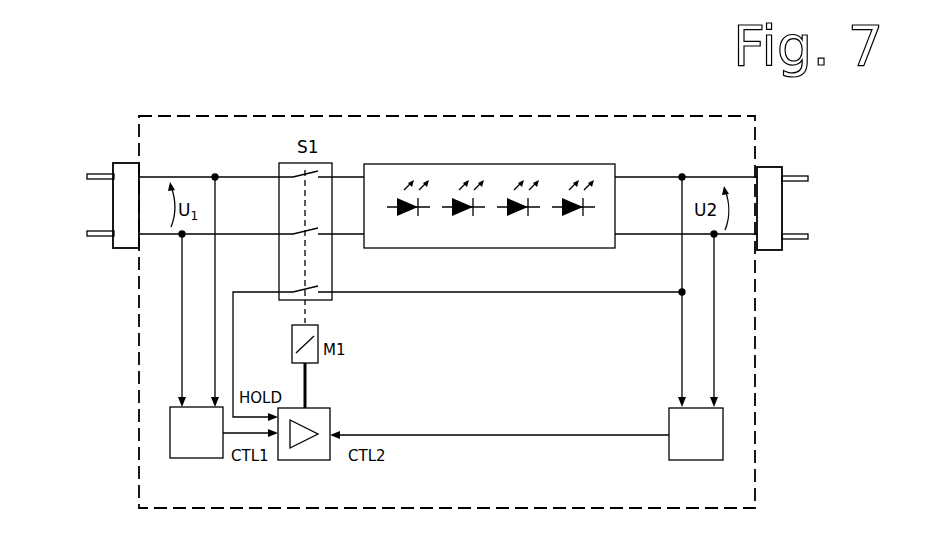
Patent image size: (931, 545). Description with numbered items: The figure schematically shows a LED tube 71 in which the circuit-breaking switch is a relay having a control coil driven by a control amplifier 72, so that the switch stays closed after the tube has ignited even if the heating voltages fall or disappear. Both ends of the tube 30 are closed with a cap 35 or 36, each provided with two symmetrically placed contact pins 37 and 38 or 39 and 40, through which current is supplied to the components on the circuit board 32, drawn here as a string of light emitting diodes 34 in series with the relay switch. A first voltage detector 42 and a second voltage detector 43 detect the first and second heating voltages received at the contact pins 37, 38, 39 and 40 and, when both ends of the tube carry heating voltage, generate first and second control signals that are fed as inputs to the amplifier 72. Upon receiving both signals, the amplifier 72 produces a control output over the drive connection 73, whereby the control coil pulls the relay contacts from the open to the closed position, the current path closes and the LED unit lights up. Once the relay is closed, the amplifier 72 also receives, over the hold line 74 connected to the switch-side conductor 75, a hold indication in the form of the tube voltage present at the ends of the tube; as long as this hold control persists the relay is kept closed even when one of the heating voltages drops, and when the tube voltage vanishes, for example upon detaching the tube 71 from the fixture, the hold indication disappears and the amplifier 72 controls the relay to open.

The tube 30 is at (553, 116).
The LED tube 71 is at (486, 95).
The circuit board 32 is at (498, 226).
The light emitting diode 34 is at (407, 217).
The cap 35 is at (127, 163).
The cap 36 is at (773, 167).
The contact pin 37 is at (100, 174).
The contact pin 38 is at (100, 237).
The contact pin 39 is at (808, 176).
The contact pin 40 is at (808, 239).
The voltage detector 42 is at (200, 459).
The voltage detector 43 is at (697, 461).
The control amplifier 72 is at (300, 461).
The actuator drive link 73 is at (308, 382).
The feedback line 74 is at (278, 292).
The switch contact line 75 is at (362, 293).